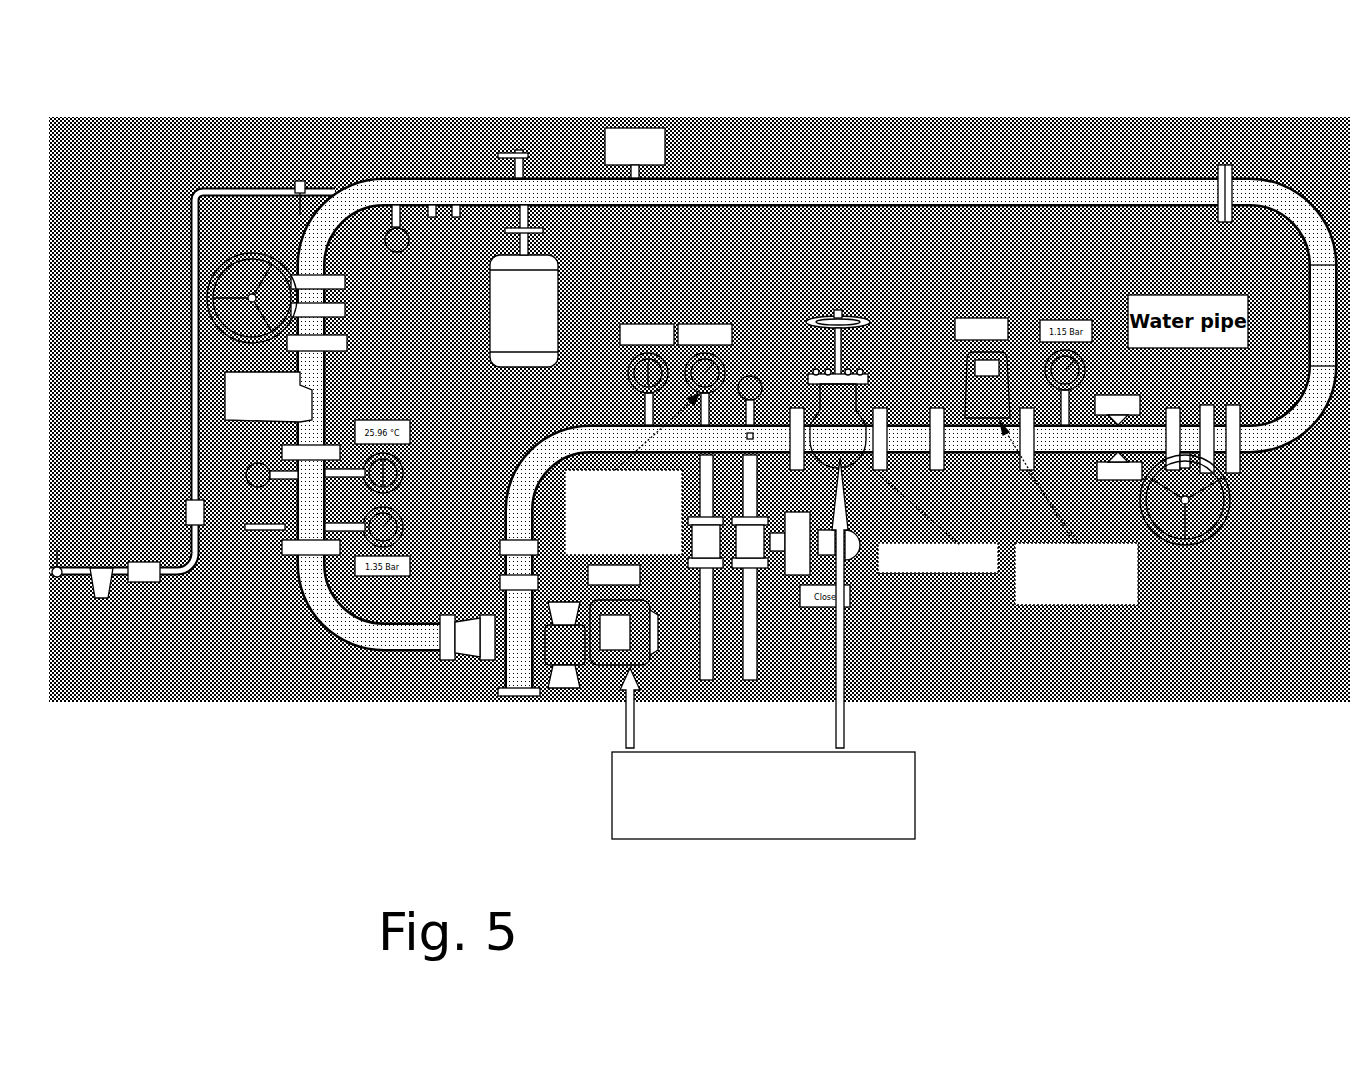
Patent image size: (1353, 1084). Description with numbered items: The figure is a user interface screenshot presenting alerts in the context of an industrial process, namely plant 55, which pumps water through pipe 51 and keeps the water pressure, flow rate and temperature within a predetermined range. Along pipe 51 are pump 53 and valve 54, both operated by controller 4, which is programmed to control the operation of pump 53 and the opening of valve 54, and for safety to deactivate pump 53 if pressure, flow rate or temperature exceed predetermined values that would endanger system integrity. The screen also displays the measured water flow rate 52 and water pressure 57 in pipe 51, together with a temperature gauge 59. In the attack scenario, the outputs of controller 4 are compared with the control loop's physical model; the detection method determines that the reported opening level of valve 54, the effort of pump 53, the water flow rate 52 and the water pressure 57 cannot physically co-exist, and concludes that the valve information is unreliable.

The plant 55 is at (1100, 103).
The pipe 51 is at (1158, 192).
The water flow rate 52 is at (982, 352).
The pump 53 is at (595, 675).
The valve 54 is at (860, 465).
The water pressure 57 is at (711, 355).
The water temperature gauge 59 is at (651, 355).
The controller 4 is at (905, 792).